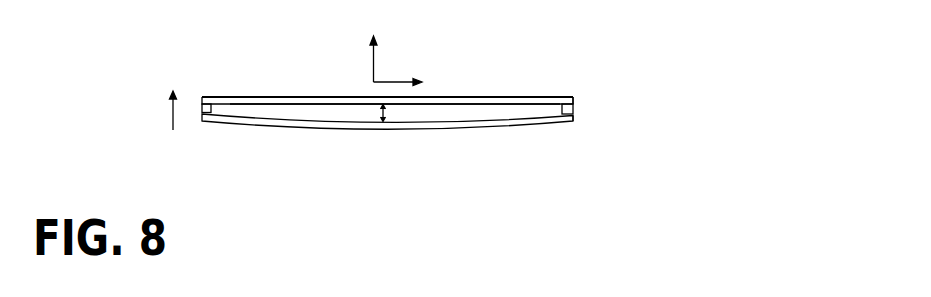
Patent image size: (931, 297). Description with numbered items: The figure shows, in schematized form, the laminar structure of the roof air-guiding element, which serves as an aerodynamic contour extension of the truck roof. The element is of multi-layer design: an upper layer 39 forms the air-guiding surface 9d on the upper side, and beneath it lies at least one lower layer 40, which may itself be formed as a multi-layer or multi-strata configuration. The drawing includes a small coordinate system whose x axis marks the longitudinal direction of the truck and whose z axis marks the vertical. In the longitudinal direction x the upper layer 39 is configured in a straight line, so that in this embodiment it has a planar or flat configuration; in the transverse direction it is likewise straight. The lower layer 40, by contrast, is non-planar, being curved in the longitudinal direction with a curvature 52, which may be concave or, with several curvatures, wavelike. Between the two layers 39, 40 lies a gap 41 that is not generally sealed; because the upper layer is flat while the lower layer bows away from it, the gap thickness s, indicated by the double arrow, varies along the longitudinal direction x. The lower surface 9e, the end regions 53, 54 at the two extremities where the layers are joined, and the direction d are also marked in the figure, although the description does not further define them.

The air-guiding surface 9d is at (330, 97).
The lower surface of laminate 9e is at (320, 130).
The upper layer 39 is at (573, 100).
The lower layer 40 is at (573, 118).
The gap 41 is at (250, 107).
The curvature 52 is at (392, 131).
The first edge spacer 53 is at (202, 106).
The second edge spacer 54 is at (573, 108).
The gap thickness s is at (380, 110).
The direction of bending d is at (164, 113).
The z direction z is at (367, 49).
The x direction x is at (407, 72).